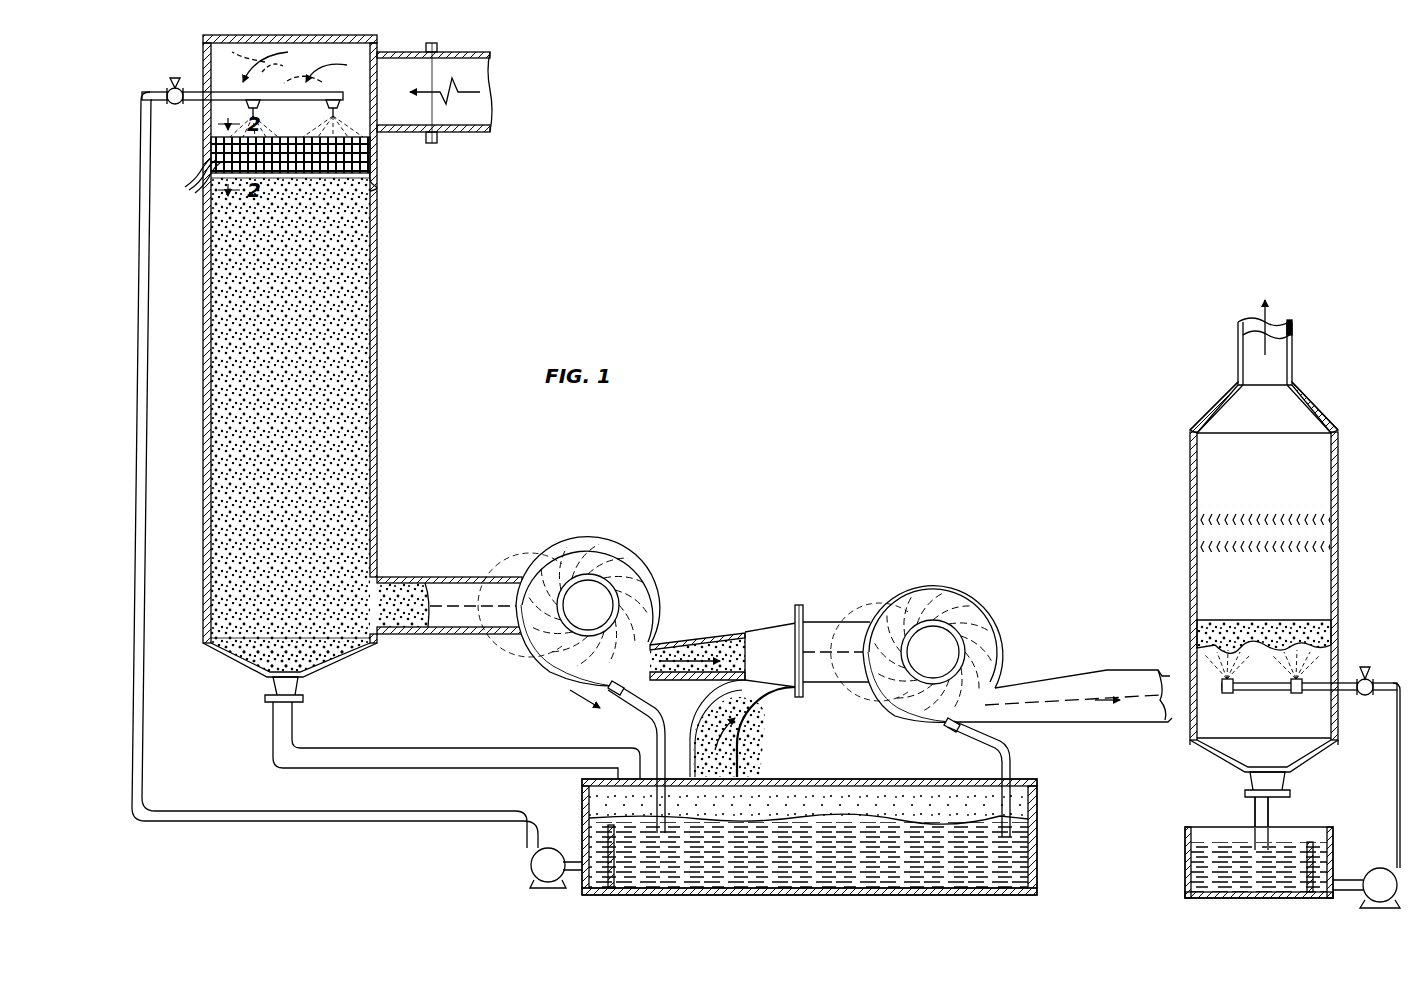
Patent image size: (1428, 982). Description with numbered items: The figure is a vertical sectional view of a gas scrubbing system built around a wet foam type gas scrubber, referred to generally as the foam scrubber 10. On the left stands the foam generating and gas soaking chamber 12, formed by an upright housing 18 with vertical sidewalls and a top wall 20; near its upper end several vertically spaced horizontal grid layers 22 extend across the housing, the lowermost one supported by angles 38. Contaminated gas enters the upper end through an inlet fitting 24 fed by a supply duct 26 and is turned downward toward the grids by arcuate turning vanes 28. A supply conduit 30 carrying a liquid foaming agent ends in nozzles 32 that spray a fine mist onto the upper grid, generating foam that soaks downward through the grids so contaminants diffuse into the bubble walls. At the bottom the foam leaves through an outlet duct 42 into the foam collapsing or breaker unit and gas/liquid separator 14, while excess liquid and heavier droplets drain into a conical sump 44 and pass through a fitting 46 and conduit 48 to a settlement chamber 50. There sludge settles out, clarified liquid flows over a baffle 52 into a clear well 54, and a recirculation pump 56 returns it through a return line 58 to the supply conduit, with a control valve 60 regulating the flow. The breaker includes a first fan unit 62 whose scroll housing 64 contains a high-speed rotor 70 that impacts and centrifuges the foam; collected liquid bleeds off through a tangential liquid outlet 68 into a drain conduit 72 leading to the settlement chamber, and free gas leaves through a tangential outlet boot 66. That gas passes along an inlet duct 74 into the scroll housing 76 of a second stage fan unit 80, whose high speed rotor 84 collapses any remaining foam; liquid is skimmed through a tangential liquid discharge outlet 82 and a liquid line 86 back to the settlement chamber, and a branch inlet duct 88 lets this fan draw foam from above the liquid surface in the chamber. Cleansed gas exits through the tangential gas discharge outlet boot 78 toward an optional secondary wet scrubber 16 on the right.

The foam scrubber 10 is at (764, 913).
The foam generating and gas soaking chamber 12 is at (378, 396).
The foam collapsing or breaker unit and gas/liquid separator 14 is at (728, 610).
The secondary wet scrubber 16 is at (1178, 545).
The upright housing 18 is at (234, 693).
The top wall 20 is at (302, 36).
The horizontal grid layers 22 is at (186, 175).
The inlet fitting 24 is at (386, 52).
The supply duct 26 is at (492, 96).
The arcuate turning vanes 28 is at (377, 140).
The supply conduit 30 is at (215, 92).
The nozzles 32 is at (262, 108).
The angles 38 is at (374, 188).
The outlet duct 42 is at (398, 560).
The conical sump 44 is at (338, 662).
The fitting 46 is at (298, 688).
The conduit 48 is at (408, 748).
The settlement chamber 50 is at (1037, 806).
The baffle 52 is at (610, 870).
The clear well 54 is at (592, 838).
The recirculation pump 56 is at (531, 866).
The return line 58 is at (147, 752).
The control valve 60 is at (174, 104).
The first fan unit 62 is at (628, 540).
The scroll housing 64 is at (647, 565).
The tangential outlet boot 66 is at (672, 636).
The tangential liquid outlet 68 is at (613, 696).
The high-speed rotor 70 is at (656, 586).
The drain conduit 72 is at (657, 742).
The inlet duct 74 is at (802, 608).
The scroll housing 76 is at (928, 584).
The tangential gas discharge outlet boot 78 is at (1028, 680).
The second stage fan unit 80 is at (1004, 620).
The tangential liquid discharge outlet 82 is at (940, 730).
The high speed rotor 84 is at (974, 590).
The liquid line 86 is at (1012, 744).
The branch inlet duct 88 is at (752, 716).